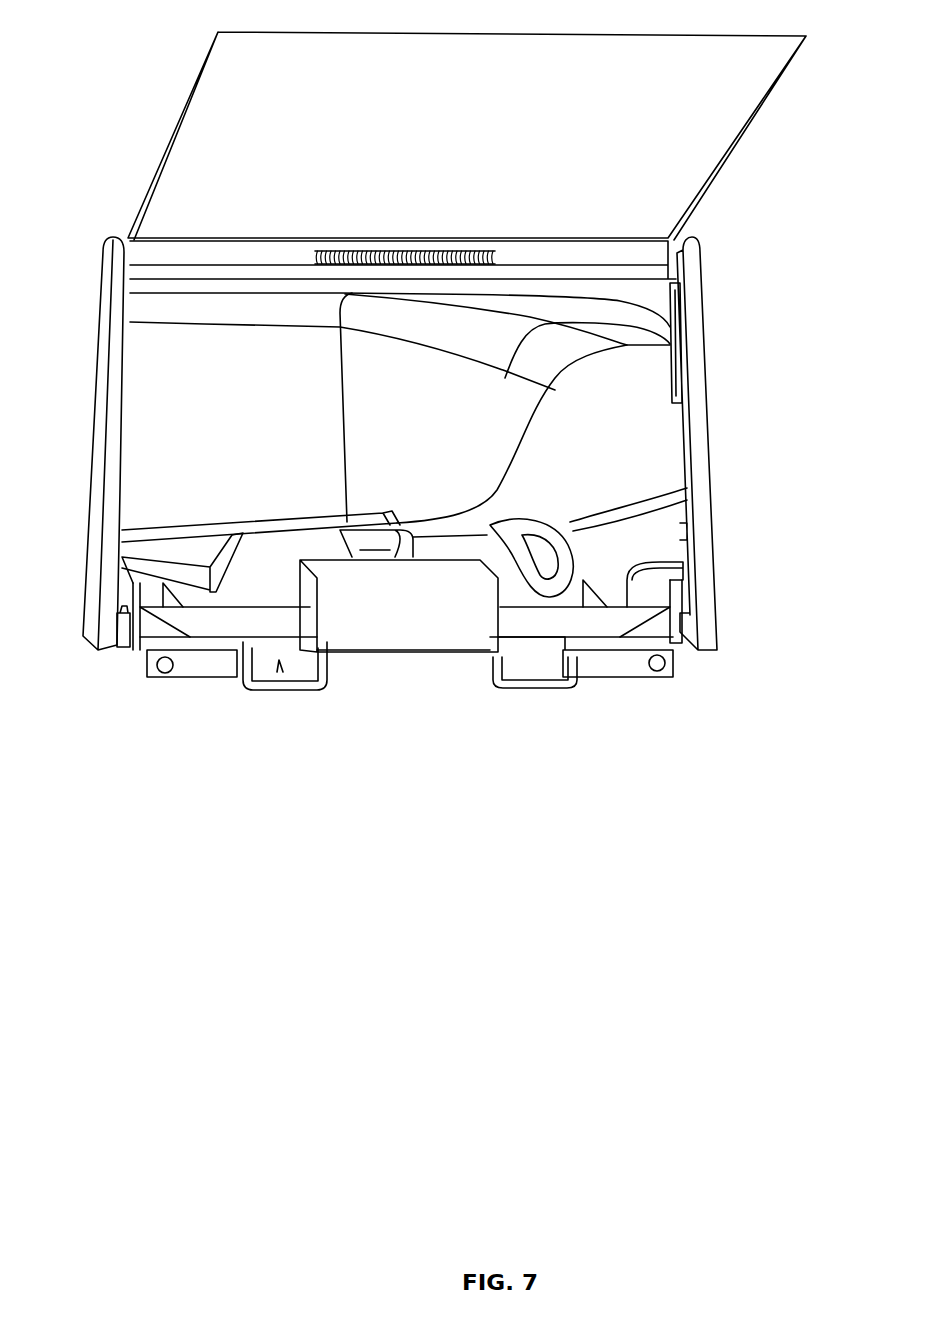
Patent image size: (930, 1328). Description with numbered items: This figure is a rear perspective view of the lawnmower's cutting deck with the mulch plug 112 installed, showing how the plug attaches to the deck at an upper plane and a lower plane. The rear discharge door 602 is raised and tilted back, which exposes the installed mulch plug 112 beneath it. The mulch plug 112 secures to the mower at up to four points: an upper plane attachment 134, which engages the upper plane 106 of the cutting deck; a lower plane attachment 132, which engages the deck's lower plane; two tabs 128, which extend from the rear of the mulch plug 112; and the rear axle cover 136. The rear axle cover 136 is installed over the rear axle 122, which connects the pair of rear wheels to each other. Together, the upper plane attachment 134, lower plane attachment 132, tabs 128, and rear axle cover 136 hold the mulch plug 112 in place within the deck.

The rear discharge door 602 is at (292, 140).
The upper plane 106 is at (560, 342).
The upper plane attachment 134 is at (640, 377).
The mulch plug 112 is at (600, 500).
The lower plane attachment 132 is at (138, 508).
The rear axle cover 136 is at (587, 623).
The tabs 128 is at (528, 685).
The rear axle 122 is at (123, 635).